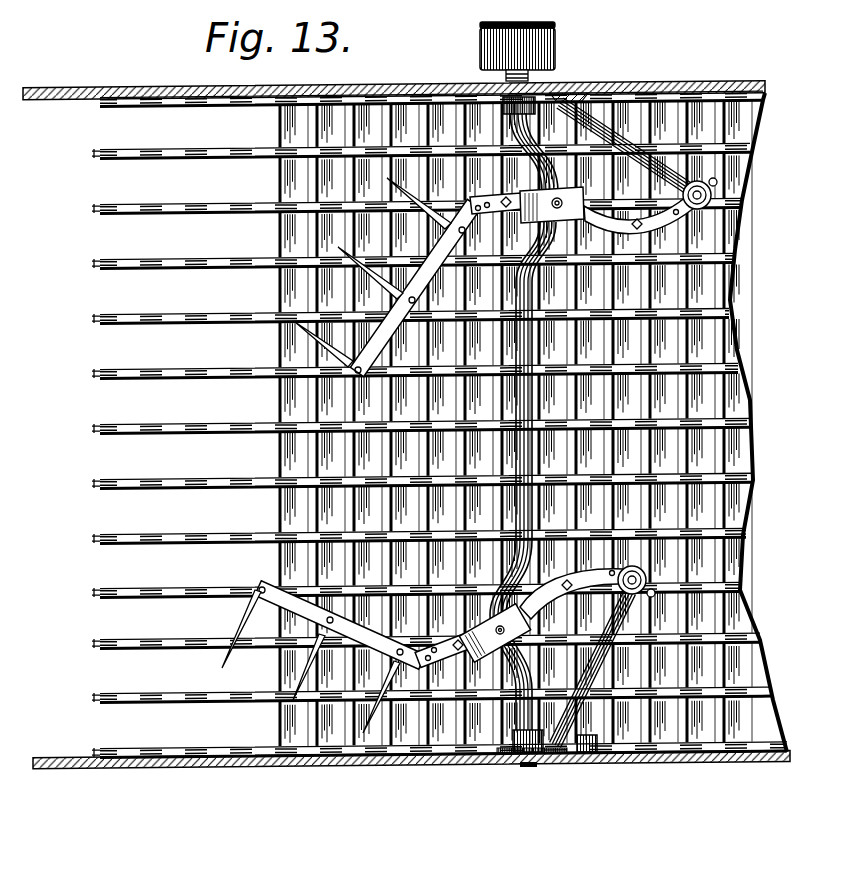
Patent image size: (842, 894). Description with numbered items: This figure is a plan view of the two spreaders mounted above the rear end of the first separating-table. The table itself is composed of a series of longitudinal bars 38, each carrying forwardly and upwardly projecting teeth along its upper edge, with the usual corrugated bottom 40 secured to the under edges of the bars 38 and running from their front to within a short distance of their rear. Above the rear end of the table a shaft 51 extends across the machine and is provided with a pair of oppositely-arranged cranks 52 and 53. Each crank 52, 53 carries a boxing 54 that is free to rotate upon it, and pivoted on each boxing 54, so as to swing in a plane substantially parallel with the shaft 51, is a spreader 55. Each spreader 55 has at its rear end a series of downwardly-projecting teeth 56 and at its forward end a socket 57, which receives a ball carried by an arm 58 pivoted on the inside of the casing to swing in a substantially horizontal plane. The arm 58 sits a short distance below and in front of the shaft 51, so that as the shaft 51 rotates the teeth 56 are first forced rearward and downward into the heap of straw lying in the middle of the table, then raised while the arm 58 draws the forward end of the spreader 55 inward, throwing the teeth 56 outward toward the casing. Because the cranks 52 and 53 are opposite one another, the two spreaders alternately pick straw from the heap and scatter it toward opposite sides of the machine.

The longitudinal bars 38 is at (135, 537).
The corrugated bottom 40 is at (293, 451).
The shaft 51 is at (530, 78).
The crank 52 is at (533, 168).
The crank 53 is at (500, 688).
The boxing 54 is at (536, 190).
The spreader 55 is at (340, 378).
The teeth 56 is at (298, 332).
The socket 57 is at (711, 195).
The arm 58 is at (608, 86).